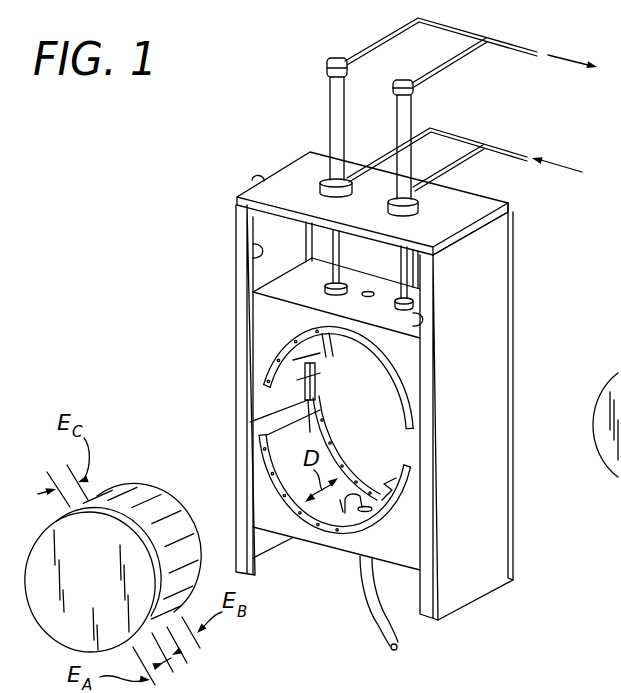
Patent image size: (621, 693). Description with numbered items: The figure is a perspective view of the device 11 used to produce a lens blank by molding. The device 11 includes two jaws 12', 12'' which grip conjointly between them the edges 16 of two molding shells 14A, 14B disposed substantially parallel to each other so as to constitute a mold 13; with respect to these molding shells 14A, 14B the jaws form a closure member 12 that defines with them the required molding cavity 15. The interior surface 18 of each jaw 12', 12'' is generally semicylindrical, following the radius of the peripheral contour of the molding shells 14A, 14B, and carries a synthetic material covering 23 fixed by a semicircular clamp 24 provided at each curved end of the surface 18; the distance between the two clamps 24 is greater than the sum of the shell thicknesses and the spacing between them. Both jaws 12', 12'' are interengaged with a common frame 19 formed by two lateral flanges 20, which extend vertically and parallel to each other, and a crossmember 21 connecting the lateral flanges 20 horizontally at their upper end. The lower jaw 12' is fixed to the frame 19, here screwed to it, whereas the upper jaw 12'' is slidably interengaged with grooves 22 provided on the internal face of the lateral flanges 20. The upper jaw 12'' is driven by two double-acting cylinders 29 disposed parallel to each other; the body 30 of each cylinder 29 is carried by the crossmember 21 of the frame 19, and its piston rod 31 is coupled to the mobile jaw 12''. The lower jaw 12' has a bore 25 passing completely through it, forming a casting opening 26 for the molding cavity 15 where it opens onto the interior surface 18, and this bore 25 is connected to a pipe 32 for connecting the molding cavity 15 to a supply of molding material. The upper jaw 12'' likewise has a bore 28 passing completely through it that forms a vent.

The device 11 is at (150, 270).
The closure member 12 is at (133, 401).
The jaw 12' is at (205, 435).
The jaw 12'' is at (208, 356).
The mold 13 is at (276, 254).
The molding shell 14A is at (32, 614).
The molding shell 14B is at (113, 476).
The molding cavity 15 is at (163, 540).
The edge 16 is at (140, 497).
The interior surface 18 is at (388, 396).
The frame 19 is at (515, 246).
The lateral flange 20 is at (260, 179).
The crossmember 21 is at (310, 172).
The groove 22 is at (252, 252).
The synthetic material covering 23 is at (316, 386).
The semicircular clamp 24 is at (334, 456).
The bore 25 is at (342, 504).
The casting opening 26 is at (362, 500).
The bore 28 is at (369, 291).
The double-acting cylinder 29 is at (313, 97).
The body 30 is at (401, 132).
The piston rod 31 is at (402, 257).
The pipe 32 is at (383, 629).